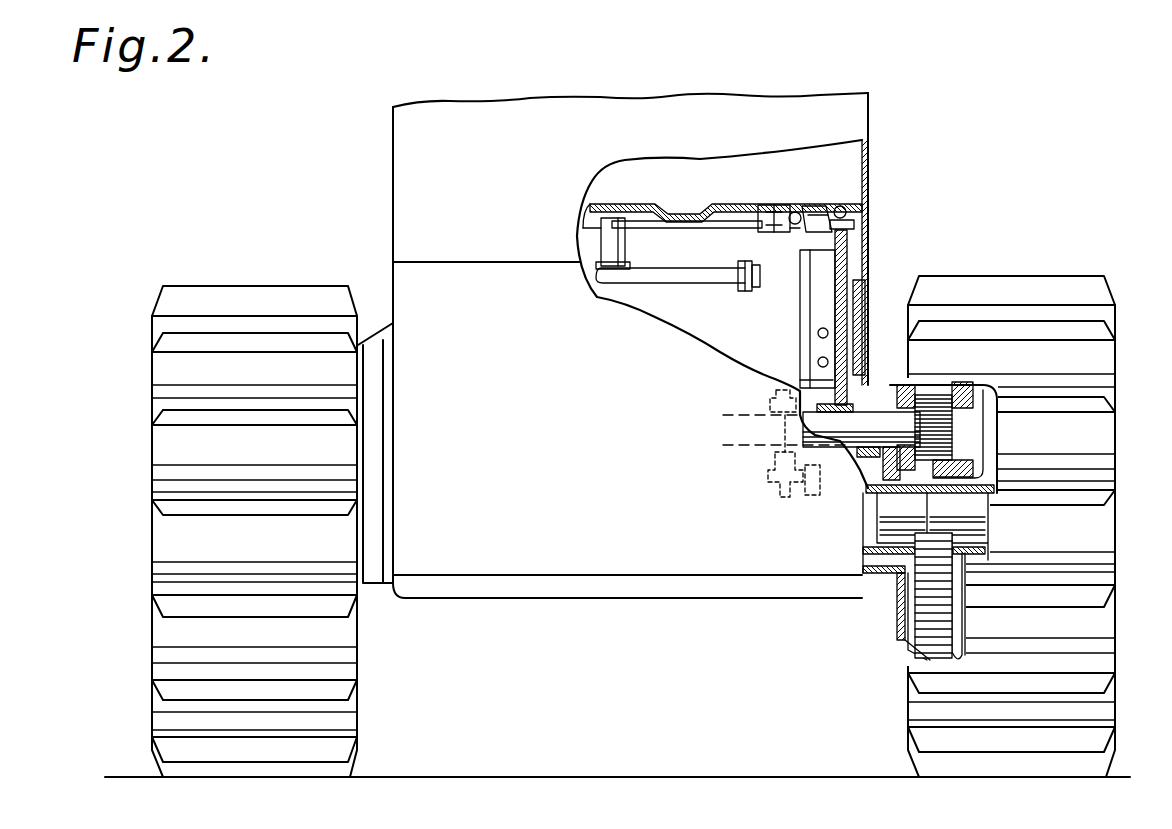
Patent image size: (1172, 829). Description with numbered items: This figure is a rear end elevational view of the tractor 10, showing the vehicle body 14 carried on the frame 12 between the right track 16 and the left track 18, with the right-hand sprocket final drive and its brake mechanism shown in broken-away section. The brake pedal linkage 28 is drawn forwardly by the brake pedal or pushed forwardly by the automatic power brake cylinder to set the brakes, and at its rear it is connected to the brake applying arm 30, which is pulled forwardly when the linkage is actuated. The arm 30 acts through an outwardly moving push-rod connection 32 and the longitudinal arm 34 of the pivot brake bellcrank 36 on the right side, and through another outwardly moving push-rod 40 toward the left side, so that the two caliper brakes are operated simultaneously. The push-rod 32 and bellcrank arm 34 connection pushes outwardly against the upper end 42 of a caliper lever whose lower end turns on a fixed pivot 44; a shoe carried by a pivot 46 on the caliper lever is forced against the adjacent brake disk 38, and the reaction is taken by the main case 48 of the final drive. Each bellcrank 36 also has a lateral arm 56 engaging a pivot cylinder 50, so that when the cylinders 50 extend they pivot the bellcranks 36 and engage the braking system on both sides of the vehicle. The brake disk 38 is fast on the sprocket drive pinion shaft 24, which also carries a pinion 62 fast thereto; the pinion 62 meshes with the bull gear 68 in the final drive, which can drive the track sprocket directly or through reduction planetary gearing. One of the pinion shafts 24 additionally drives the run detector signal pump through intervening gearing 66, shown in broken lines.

The vehicle 10 is at (800, 107).
The frame 12 is at (597, 592).
The body 14 is at (405, 181).
The track 16 is at (1005, 292).
The track 18 is at (348, 748).
The sprocket drive pinion shaft 24 is at (878, 450).
The brake pedal linkage 28 is at (747, 262).
The brake applying arm 30 is at (695, 285).
The push-rod connection 32 is at (722, 200).
The longitudinal arm 34 is at (810, 206).
The pivot brake bellcrank 36 is at (792, 210).
The brake disk 38 is at (872, 292).
The push-rod 40 is at (580, 236).
The upper end of caliper lever 42 is at (846, 205).
The fixed pivot 44 is at (816, 362).
The pivot 46 is at (816, 333).
The main case 48 is at (870, 325).
The pivot cylinder 50 is at (770, 205).
The lateral arm 56 is at (745, 229).
The pinion 62 is at (935, 395).
The intervening gearing 66 is at (768, 476).
The bull gear 68 is at (903, 612).